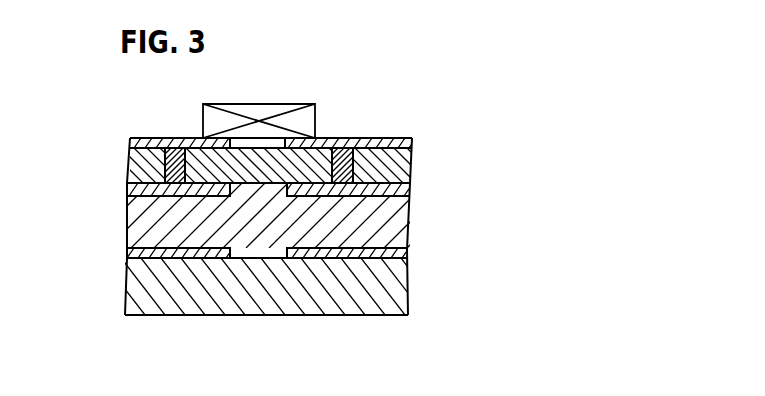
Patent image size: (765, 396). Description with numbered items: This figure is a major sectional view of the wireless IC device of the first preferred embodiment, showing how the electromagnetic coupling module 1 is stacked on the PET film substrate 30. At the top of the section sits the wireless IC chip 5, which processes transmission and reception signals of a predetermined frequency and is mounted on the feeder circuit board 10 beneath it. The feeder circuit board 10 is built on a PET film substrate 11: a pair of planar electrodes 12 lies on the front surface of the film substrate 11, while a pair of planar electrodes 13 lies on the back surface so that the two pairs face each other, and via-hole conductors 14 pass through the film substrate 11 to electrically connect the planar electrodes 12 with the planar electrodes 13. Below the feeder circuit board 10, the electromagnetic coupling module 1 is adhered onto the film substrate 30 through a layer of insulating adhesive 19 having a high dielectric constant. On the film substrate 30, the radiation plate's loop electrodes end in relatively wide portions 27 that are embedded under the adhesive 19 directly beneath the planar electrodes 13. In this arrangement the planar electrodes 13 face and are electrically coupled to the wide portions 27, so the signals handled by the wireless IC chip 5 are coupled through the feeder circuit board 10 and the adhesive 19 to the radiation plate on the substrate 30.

The electromagnetic coupling module 1 is at (490, 95).
The wireless IC chip 5 is at (292, 104).
The feeder circuit board 10 is at (438, 135).
The PET film substrate 11 is at (395, 138).
The planar electrodes 12 is at (370, 138).
The planar electrodes 13 is at (452, 213).
The via-hole conductors 14 is at (338, 148).
The insulating adhesive 19 is at (128, 209).
The wide portions 27 is at (453, 248).
The PET film substrate 30 is at (342, 315).